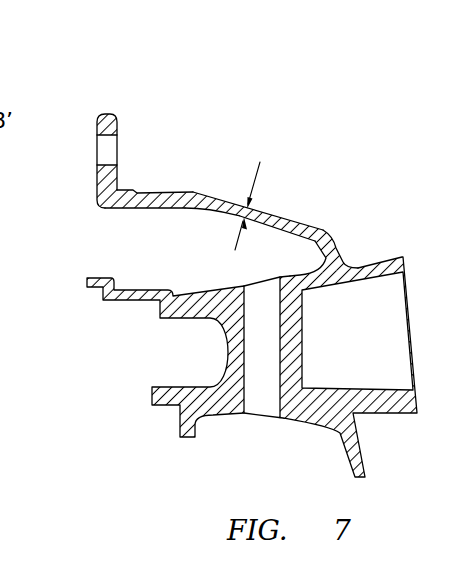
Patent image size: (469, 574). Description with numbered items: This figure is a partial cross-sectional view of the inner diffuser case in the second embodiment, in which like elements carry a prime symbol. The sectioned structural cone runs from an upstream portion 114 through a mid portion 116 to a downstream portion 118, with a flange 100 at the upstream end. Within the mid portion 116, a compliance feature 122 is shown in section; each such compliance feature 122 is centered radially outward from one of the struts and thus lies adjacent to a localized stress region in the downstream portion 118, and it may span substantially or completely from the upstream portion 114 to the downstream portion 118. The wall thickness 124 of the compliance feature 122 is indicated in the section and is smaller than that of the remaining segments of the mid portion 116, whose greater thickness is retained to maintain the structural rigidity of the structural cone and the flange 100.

The flange 100 is at (115, 130).
The upstream portion 114 is at (160, 192).
The mid portion 116 is at (288, 220).
The downstream portion 118 is at (343, 250).
The compliance feature 122 is at (308, 225).
The wall thickness 124 is at (247, 204).